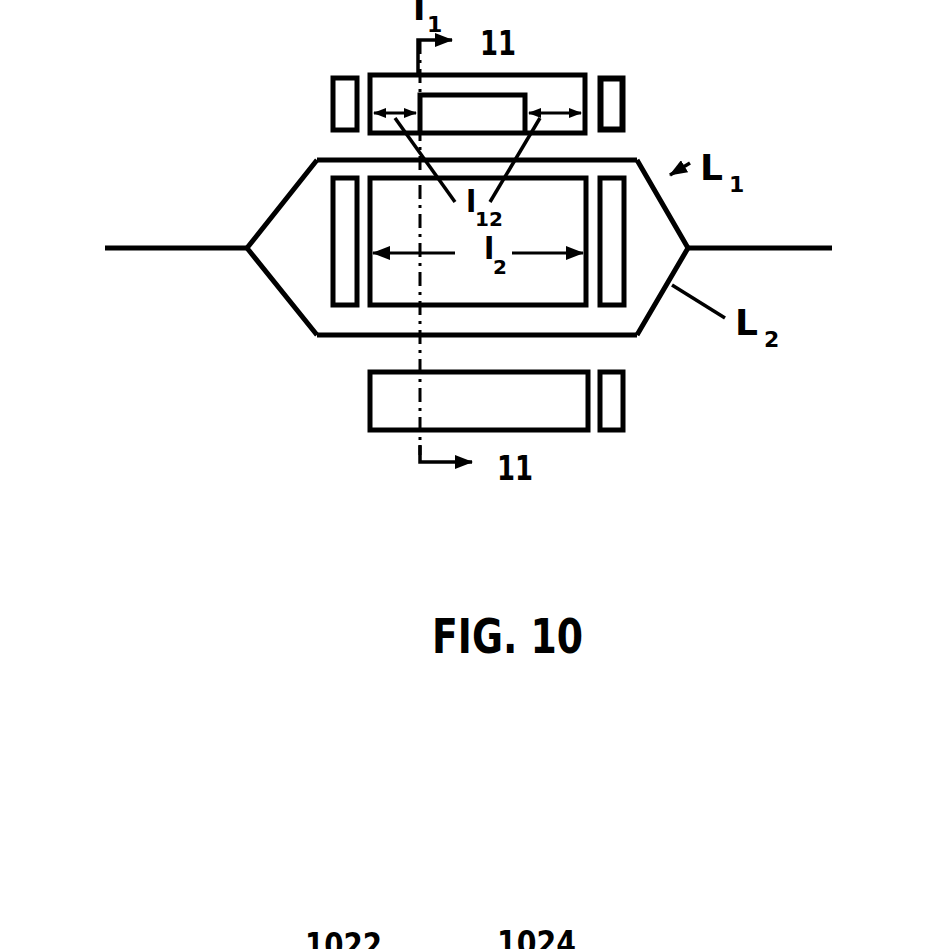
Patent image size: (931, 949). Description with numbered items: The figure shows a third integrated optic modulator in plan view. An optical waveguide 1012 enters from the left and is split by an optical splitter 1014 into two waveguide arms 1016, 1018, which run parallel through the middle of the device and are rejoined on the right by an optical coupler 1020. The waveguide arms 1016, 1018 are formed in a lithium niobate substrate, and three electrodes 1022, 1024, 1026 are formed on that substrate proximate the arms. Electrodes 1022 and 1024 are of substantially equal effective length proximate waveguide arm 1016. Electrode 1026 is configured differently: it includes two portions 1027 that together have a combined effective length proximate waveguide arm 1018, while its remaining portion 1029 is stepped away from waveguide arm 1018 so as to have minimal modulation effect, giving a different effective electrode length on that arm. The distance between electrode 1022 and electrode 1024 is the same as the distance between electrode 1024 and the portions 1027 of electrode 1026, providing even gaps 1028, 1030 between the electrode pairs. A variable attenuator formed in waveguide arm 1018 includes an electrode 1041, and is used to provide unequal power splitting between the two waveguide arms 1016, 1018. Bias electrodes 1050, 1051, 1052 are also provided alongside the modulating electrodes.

The optical waveguide 1012 is at (172, 244).
The optical splitter 1014 is at (246, 246).
The waveguide arm 1016 is at (297, 183).
The waveguide arm 1018 is at (278, 292).
The optical coupler 1020 is at (690, 246).
The electrode 1022 is at (568, 392).
The electrode 1024 is at (550, 268).
The electrode 1026 is at (407, 93).
The portions of electrode 1027 is at (373, 92).
The gap 1028 is at (340, 367).
The remaining portion of electrode 1029 is at (505, 92).
The gap 1030 is at (596, 146).
The electrode 1041 is at (332, 253).
The bias electrode 1050 is at (617, 410).
The bias electrode 1051 is at (615, 237).
The bias electrode 1052 is at (612, 112).